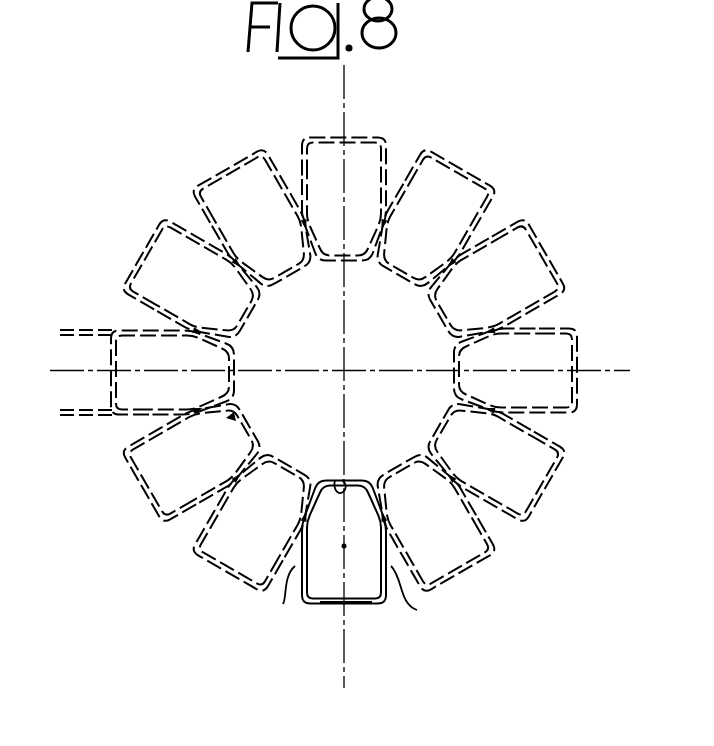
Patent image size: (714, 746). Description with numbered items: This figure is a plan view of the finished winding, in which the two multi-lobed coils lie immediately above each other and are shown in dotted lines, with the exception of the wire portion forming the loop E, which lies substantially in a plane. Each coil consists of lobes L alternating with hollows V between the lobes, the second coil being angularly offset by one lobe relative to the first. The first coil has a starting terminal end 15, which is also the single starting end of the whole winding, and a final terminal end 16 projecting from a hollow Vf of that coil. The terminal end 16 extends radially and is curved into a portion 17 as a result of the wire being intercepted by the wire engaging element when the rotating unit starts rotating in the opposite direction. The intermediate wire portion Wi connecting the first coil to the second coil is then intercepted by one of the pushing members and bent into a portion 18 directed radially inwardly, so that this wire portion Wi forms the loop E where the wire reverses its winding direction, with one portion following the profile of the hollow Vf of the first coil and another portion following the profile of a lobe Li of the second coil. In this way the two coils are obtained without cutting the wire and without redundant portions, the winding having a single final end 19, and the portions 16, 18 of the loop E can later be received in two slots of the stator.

The starting terminal end 15 is at (73, 417).
The final terminal end 16 is at (417, 610).
The curved portion 17 is at (358, 604).
The radially inwardly directed portion 18 is at (283, 604).
The final end 19 is at (80, 329).
The loop E is at (348, 531).
The lobe L is at (547, 485).
The lobe of the second multi-lobed coil Li is at (320, 600).
The hollow V is at (228, 416).
The hollow Vf is at (335, 480).
The intermediate wire portion Wi is at (382, 607).